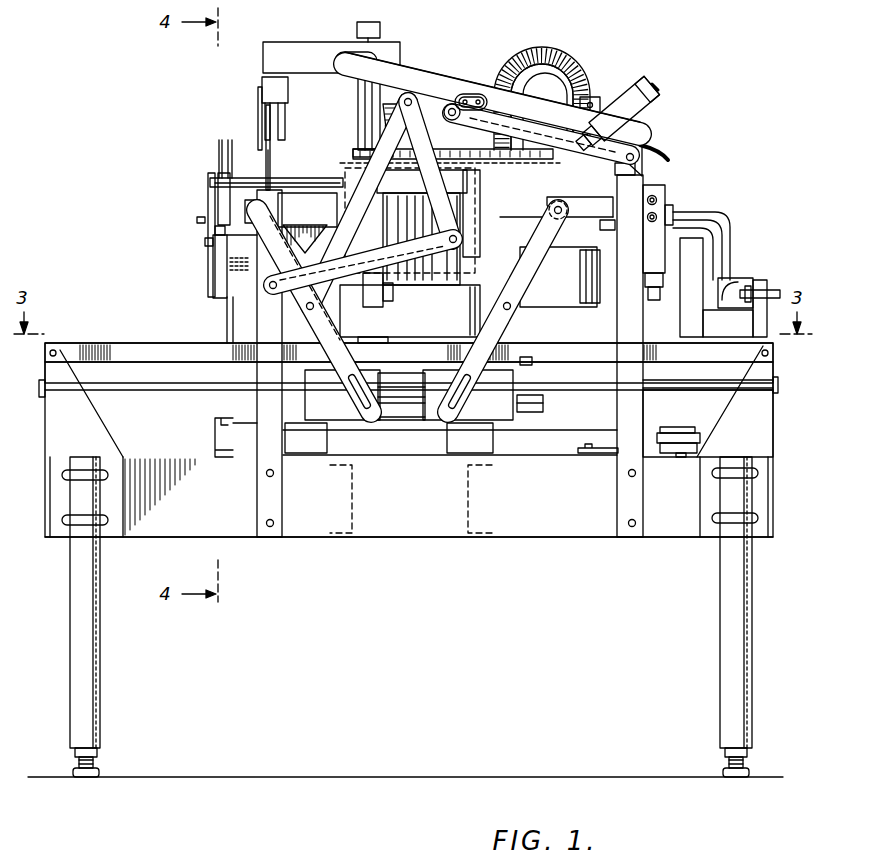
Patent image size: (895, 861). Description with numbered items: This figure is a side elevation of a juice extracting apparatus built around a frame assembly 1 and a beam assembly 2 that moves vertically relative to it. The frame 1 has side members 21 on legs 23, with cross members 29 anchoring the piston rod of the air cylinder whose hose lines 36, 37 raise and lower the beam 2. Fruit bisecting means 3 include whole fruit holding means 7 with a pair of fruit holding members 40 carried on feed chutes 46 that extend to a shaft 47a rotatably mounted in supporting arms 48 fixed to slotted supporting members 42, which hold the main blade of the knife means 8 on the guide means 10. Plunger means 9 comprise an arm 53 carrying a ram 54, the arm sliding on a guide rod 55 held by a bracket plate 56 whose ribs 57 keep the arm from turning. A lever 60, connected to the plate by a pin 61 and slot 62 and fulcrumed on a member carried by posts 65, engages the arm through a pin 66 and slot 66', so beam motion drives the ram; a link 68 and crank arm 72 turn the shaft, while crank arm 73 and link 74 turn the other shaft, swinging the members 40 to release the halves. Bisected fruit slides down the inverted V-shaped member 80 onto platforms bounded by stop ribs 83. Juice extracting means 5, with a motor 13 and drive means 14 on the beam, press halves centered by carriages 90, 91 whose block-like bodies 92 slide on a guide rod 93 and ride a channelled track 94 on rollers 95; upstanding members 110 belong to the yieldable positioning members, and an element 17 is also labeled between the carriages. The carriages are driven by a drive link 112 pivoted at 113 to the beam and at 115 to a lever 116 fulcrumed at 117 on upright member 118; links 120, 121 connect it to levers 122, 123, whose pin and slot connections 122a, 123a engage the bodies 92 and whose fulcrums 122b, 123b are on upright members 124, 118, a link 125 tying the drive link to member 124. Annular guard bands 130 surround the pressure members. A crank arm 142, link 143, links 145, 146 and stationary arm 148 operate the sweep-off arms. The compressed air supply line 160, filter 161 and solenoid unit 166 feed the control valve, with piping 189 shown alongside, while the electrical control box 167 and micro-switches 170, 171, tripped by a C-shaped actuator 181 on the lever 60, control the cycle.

The frame assembly 1 is at (158, 462).
The beam assembly 2 is at (358, 172).
The fruit bisecting means 3 is at (290, 222).
The juice extracting means 5 is at (418, 328).
The whole fruit holding means 7 is at (238, 245).
The knife means 8 is at (238, 268).
The plunger means 9 is at (288, 122).
The guide means 10 is at (226, 330).
The motor 13 is at (553, 302).
The drive means 14 is at (478, 160).
The center block 17 is at (404, 412).
The side members 21 is at (571, 530).
The legs 23 is at (72, 626).
The cross members 29 is at (350, 505).
The flexible hose line 36 is at (527, 50).
The flexible hose line 37 is at (545, 64).
The fruit holding members 40 is at (316, 230).
The slotted supporting members 42 is at (213, 281).
The feed chutes 46 is at (288, 186).
The shaft 47a is at (210, 181).
The supporting arms 48 is at (208, 207).
The arm 53 is at (275, 42).
The plunger or ram 54 is at (282, 118).
The guide rod 55 is at (365, 93).
The bracket plate 56 is at (398, 52).
The ribs 57 is at (400, 78).
The lever 60 is at (445, 66).
The pin 61 is at (466, 96).
The slot 62 is at (484, 98).
The posts 65 is at (616, 497).
The pin 66 is at (344, 45).
The slot 66' is at (364, 21).
The link 68 is at (262, 92).
The crank arm 72 is at (272, 182).
The crank arm 73 is at (230, 145).
The link 74 is at (219, 149).
The inverted V-shaped member 80 is at (228, 373).
The stop ribs 83 is at (230, 416).
The carriage 90 is at (330, 413).
The carriage 91 is at (492, 413).
The block-like body 92 is at (409, 395).
The guide rod 93 is at (668, 388).
The channelled track 94 is at (140, 343).
The rollers 95 is at (533, 363).
The upstanding members 110 is at (543, 405).
The drive link 112 is at (470, 218).
The pivot 113 is at (445, 182).
The pivot 115 is at (452, 104).
The lever 116 is at (528, 94).
The fulcrum 117 is at (650, 160).
The upright member 118 is at (640, 170).
The link 120 is at (385, 125).
The link 121 is at (470, 239).
The lever 122 is at (330, 334).
The pin and slot connection 122a is at (364, 420).
The fulcrum 122b is at (258, 204).
The lever 123 is at (530, 271).
The pin and slot connection 123a is at (453, 420).
The fulcrum 123b is at (564, 208).
The upright member 124 is at (257, 310).
The link 125 is at (360, 290).
The annular guard bands 130 is at (385, 334).
The crank arm 142 is at (517, 460).
The link 143 is at (600, 452).
The link 145 is at (683, 428).
The link 146 is at (680, 458).
The stationary arm 148 is at (700, 437).
The compressed air supply line 160 is at (762, 288).
The filter 161 is at (718, 371).
The solenoid unit 166 is at (662, 298).
The electrical control box 167 is at (660, 198).
The micro-switch 170 is at (578, 96).
The micro-switch 171 is at (628, 88).
The C-shaped actuator 181 is at (655, 95).
The pipe 189 is at (705, 244).